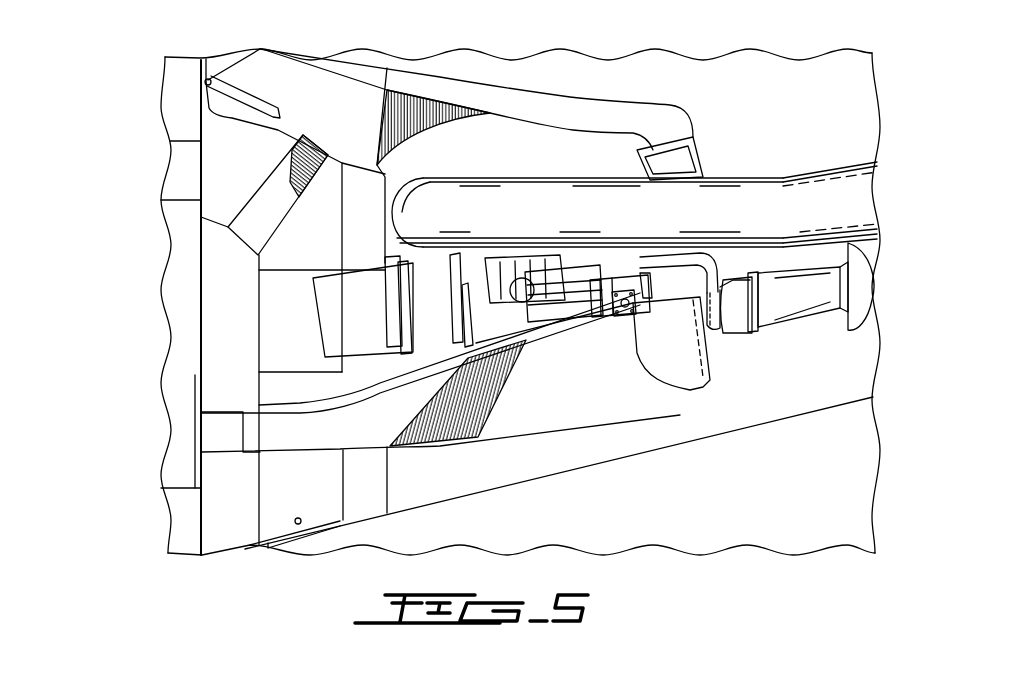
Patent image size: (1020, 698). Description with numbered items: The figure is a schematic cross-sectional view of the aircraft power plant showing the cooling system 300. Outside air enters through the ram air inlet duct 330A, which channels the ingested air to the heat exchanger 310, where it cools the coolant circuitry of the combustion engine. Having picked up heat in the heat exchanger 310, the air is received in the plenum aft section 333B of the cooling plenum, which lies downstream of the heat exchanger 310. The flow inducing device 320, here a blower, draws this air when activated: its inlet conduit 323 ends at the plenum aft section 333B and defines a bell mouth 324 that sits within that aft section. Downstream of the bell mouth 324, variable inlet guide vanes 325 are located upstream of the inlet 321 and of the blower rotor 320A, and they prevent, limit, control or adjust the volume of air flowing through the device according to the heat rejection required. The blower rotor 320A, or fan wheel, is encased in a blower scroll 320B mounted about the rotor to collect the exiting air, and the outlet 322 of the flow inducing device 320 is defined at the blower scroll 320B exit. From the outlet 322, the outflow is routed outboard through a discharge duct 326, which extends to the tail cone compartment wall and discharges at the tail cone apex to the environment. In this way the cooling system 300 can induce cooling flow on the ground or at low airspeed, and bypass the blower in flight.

The cooling system 300 is at (158, 106).
The heat exchanger 310 is at (258, 195).
The flow inducing device 320 is at (410, 321).
The blower rotor 320A is at (455, 307).
The blower scroll 320B is at (464, 308).
The inlet 321 is at (410, 308).
The outlet 322 is at (384, 208).
The inlet conduit 323 is at (416, 292).
The bell mouth 324 is at (320, 268).
The variable inlet guide vanes 325 is at (439, 329).
The discharge duct 326 is at (700, 389).
The ram air inlet duct 330A is at (233, 160).
The plenum aft section 333B is at (303, 350).